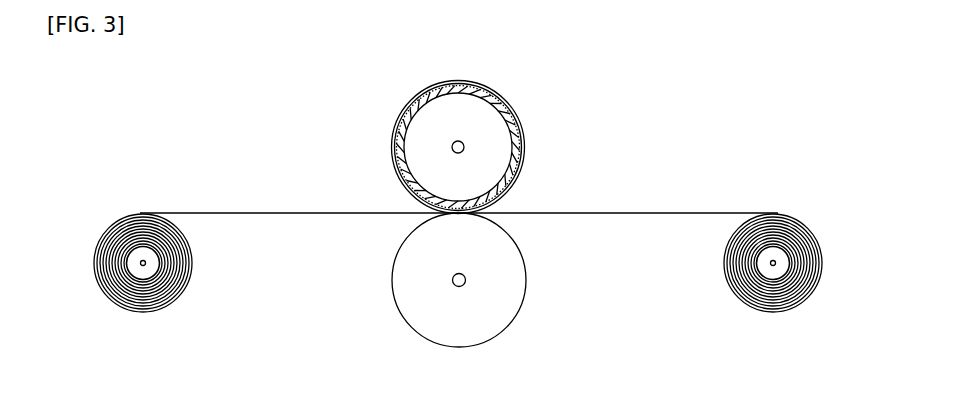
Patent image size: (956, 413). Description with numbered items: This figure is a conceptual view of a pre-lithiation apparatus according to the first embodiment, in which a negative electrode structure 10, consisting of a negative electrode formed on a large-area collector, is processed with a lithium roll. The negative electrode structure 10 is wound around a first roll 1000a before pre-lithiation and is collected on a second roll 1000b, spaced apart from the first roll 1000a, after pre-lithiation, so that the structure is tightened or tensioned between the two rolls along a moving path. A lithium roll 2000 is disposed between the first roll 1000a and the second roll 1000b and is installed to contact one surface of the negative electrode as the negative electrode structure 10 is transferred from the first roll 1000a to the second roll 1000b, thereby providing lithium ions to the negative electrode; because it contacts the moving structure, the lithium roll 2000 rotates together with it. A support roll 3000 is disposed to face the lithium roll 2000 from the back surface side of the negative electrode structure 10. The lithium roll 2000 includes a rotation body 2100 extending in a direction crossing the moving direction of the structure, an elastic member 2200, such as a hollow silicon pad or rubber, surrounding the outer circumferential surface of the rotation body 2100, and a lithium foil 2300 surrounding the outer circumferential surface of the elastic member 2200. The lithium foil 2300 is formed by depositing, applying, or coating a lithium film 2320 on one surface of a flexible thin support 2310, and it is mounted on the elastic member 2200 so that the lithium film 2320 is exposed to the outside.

The negative electrode structure 10 is at (295, 204).
The first roll 1000a is at (143, 270).
The second roll 1000b is at (773, 270).
The lithium roll 2000 is at (578, 147).
The rotation body 2100 is at (518, 172).
The elastic member 2200 is at (498, 162).
The lithium foil 2300 is at (539, 147).
The support 2310 is at (519, 126).
The lithium film 2320 is at (520, 113).
The support roll 3000 is at (458, 345).